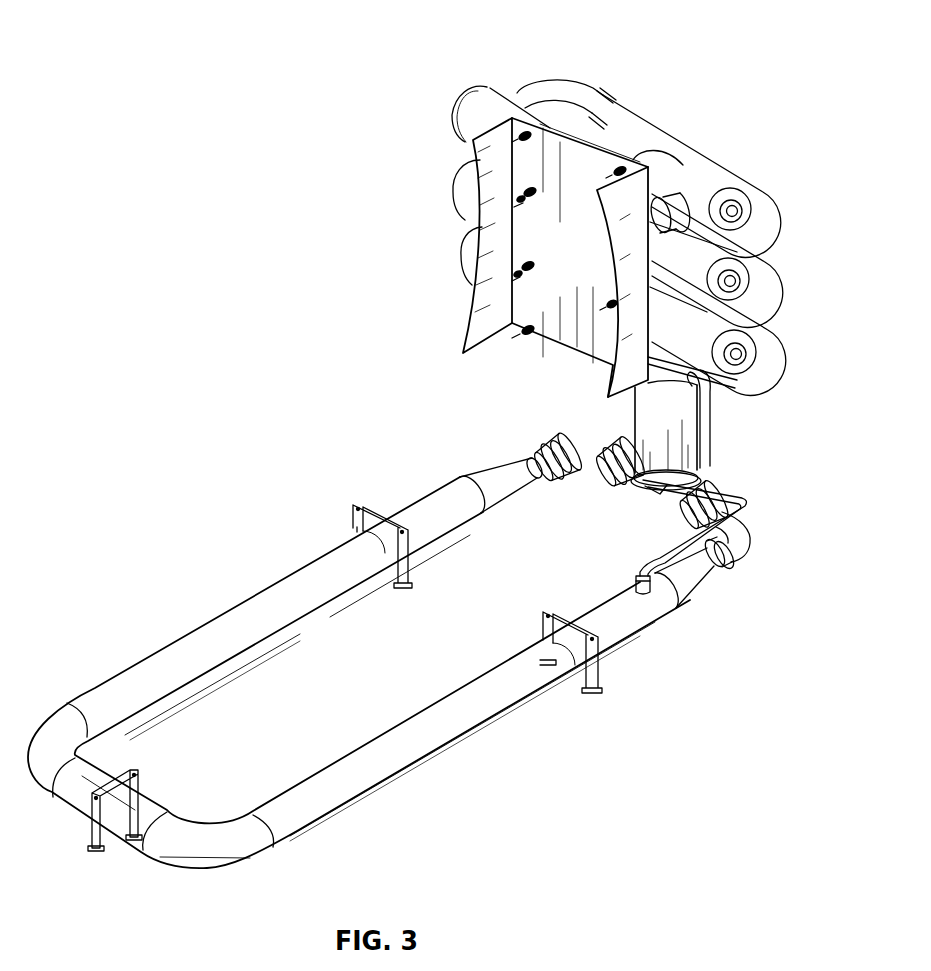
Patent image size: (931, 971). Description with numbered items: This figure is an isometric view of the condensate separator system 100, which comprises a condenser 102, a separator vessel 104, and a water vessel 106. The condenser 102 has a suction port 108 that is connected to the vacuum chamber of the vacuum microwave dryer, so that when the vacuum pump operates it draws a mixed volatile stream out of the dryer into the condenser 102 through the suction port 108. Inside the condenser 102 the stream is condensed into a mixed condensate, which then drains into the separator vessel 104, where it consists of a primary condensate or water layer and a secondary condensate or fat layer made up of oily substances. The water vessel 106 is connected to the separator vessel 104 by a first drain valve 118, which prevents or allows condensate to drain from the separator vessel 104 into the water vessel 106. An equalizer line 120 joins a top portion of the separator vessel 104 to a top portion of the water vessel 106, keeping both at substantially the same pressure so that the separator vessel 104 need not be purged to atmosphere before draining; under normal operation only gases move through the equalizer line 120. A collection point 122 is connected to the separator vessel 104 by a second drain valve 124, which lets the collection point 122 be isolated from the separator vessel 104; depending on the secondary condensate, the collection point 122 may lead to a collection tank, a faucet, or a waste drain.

The condensate separator system 100 is at (440, 50).
The condenser 102 is at (765, 213).
The separator vessel 104 is at (610, 400).
The water vessel 106 is at (222, 608).
The suction port 108 is at (658, 218).
The first drain valve 118 is at (713, 492).
The equalizer line 120 is at (738, 487).
The collection point 122 is at (608, 442).
The second drain valve 124 is at (628, 490).